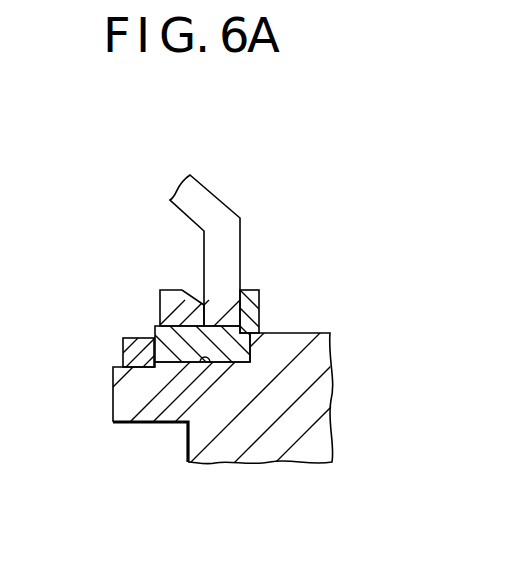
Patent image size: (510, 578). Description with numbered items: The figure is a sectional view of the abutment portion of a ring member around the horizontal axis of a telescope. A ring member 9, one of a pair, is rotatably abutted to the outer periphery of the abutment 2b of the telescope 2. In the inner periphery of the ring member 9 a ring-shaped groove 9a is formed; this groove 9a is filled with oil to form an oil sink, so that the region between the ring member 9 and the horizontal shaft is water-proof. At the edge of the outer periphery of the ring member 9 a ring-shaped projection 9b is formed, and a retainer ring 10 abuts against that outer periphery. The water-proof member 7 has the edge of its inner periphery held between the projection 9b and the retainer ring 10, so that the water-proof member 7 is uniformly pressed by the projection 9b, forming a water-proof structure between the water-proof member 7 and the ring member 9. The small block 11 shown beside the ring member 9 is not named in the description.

The telescope 2 is at (328, 333).
The abutment 2b is at (178, 363).
The water-proof member 7 is at (211, 191).
The ring member 9 is at (251, 289).
The groove 9a is at (206, 363).
The projection 9b is at (263, 312).
The retainer ring 10 is at (158, 302).
The spacer 11 is at (123, 357).